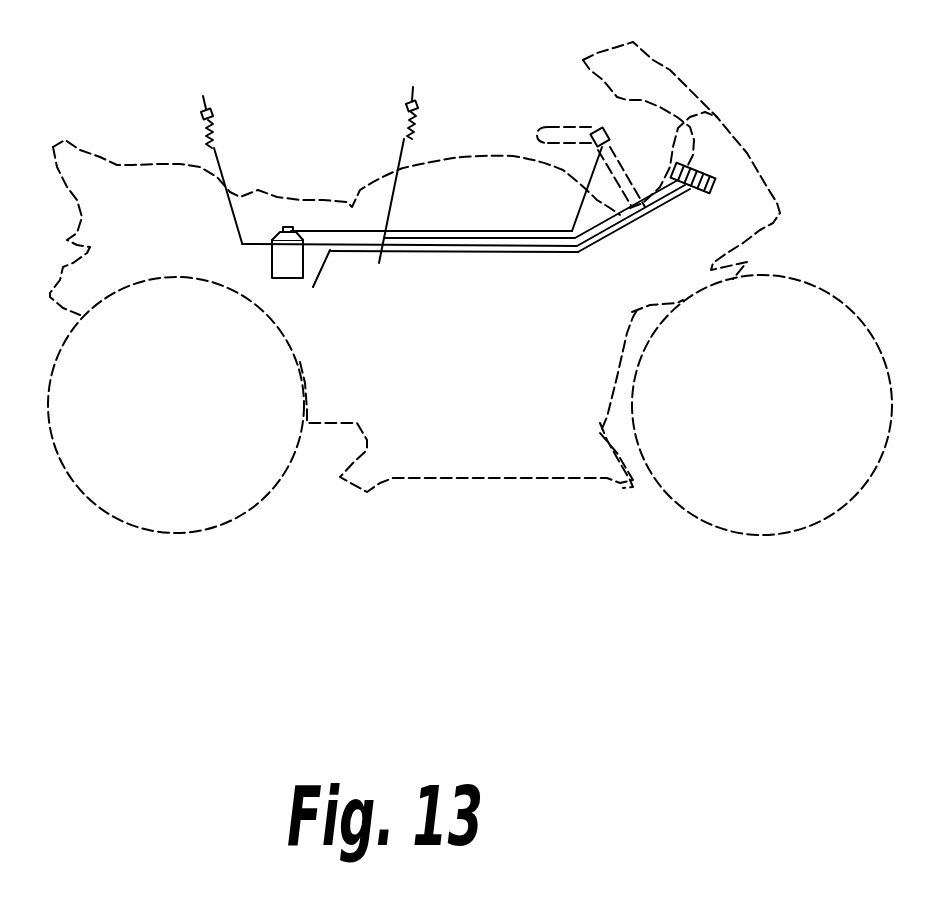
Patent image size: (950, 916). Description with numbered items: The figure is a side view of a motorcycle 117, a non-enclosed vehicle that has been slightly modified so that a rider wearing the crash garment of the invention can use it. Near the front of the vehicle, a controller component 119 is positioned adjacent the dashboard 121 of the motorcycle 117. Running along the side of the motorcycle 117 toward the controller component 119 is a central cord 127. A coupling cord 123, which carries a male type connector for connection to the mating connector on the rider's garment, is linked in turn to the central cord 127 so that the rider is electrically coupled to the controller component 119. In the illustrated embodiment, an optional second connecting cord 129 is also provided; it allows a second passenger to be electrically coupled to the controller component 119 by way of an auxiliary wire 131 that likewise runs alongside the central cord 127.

The motorcycle 117 is at (126, 116).
The controller component 119 is at (717, 172).
The dashboard 121 is at (706, 111).
The coupling cord 123 is at (398, 167).
The central cord 127 is at (455, 240).
The second connecting cord 129 is at (222, 160).
The auxiliary wire 131 is at (391, 249).